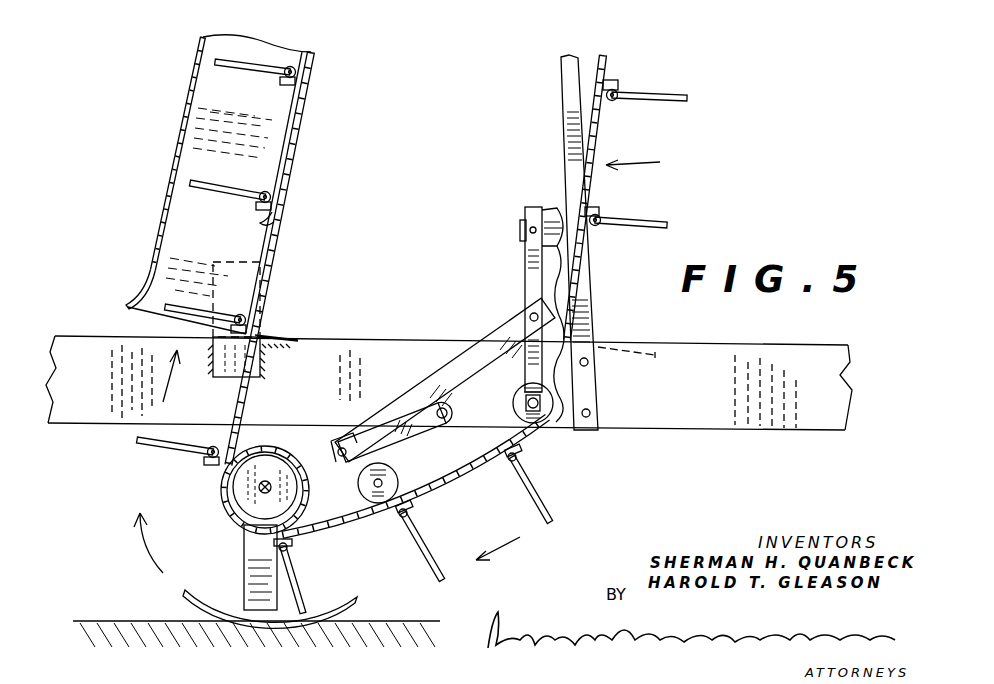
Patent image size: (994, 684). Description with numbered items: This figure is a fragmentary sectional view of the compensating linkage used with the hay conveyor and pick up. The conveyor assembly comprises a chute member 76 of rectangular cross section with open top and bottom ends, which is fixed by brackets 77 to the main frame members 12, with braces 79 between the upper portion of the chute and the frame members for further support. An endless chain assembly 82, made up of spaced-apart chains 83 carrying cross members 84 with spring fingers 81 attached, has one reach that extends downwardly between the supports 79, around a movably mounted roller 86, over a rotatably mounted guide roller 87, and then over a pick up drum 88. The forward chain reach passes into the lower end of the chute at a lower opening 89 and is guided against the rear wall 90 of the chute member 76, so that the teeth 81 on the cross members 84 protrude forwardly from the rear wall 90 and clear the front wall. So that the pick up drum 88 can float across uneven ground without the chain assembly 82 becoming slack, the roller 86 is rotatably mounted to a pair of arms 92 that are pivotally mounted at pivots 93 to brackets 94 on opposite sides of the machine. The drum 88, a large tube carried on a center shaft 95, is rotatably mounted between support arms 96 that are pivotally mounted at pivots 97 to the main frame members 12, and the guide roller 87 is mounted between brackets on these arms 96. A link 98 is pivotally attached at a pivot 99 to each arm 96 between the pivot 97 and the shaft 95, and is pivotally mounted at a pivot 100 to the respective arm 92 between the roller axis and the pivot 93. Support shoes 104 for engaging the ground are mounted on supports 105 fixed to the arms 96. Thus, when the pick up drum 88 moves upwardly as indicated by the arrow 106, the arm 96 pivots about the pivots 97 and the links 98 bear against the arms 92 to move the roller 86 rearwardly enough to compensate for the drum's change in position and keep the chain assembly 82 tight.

The main frame member 12 is at (360, 352).
The chute member 76 is at (185, 125).
The bracket 77 is at (226, 378).
The brace 79 is at (574, 100).
The spring finger 81 is at (190, 183).
The endless chain assembly 82 is at (647, 162).
The chain 83 is at (606, 66).
The cross member 84 is at (280, 226).
The roller 86 is at (516, 393).
The guide roller 87 is at (387, 503).
The pick up drum 88 is at (290, 447).
The lower opening 89 is at (140, 318).
The rear wall 90 is at (306, 124).
The arm 92 is at (525, 265).
The pivot 93 is at (528, 231).
The bracket 94 is at (556, 207).
The center shaft 95 is at (258, 489).
The support arm 96 is at (430, 430).
The pivot 97 is at (446, 418).
The link 98 is at (438, 386).
The pivot 99 is at (345, 430).
The pivot 100 is at (527, 315).
The support shoe 104 is at (205, 598).
The support 105 is at (262, 605).
The arrow 106 is at (165, 392).